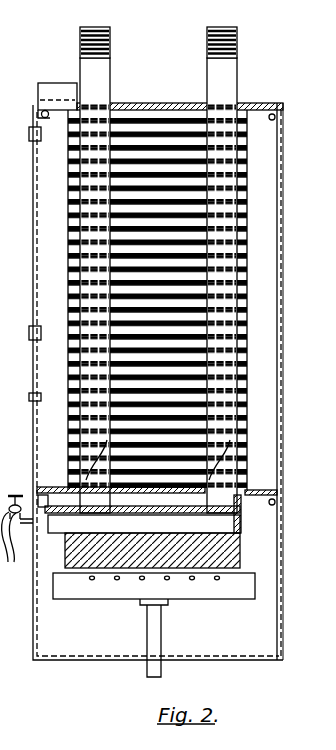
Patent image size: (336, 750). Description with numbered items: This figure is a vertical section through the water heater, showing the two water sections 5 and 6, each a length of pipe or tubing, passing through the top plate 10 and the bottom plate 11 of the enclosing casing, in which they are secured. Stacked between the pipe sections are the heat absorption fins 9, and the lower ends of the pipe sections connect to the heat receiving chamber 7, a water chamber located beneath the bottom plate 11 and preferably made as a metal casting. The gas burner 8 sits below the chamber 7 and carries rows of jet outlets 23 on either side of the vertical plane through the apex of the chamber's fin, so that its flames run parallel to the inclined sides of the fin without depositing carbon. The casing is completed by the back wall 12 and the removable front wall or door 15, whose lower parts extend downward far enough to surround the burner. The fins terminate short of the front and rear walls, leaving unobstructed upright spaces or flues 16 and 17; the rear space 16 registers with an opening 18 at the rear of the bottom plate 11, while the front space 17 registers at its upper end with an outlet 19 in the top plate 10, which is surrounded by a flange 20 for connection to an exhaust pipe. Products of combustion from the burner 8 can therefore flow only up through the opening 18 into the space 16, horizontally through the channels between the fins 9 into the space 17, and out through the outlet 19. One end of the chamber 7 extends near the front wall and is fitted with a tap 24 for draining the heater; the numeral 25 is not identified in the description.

The water section 5 is at (88, 72).
The water section 6 is at (228, 95).
The heat receiving chamber 7 is at (205, 522).
The gas burner 8 is at (205, 593).
The heat absorption fins 9 is at (68, 218).
The top plate 10 is at (156, 108).
The bottom plate 11 is at (53, 487).
The back wall 12 is at (283, 280).
The removable front wall or door 15 is at (35, 173).
The upright space or flue 16 is at (260, 378).
The upright space or flue 17 is at (48, 380).
The opening 18 is at (255, 492).
The outlet 19 is at (52, 88).
The flange 20 is at (38, 110).
The jet outlets 23 is at (117, 580).
The tap 24 is at (16, 544).
The connection 25 is at (335, 705).